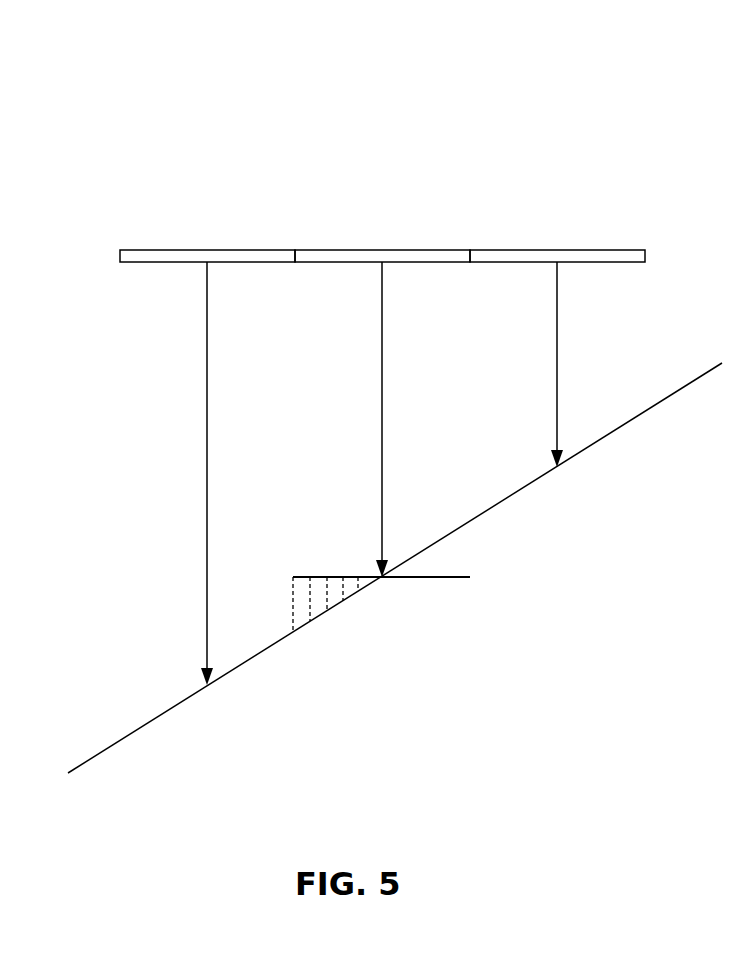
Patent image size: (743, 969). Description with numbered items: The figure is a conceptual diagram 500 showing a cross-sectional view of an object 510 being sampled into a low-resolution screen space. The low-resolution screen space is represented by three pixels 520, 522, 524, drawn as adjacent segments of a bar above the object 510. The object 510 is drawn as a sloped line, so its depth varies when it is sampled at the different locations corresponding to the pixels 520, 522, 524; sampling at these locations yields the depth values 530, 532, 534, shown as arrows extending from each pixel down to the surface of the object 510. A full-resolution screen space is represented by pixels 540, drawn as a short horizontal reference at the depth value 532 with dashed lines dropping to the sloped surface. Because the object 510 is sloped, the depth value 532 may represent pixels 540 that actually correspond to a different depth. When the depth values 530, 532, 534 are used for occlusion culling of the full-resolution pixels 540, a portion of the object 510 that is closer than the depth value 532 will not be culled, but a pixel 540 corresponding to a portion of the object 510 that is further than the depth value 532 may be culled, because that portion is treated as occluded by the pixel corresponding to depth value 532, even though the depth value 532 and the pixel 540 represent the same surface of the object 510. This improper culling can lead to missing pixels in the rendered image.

The conceptual diagram 500 is at (213, 94).
The object 510 is at (147, 725).
The pixel 520 is at (230, 250).
The pixel 522 is at (402, 255).
The pixel 524 is at (580, 247).
The depth value 530 is at (208, 430).
The depth value 532 is at (382, 437).
The depth value 534 is at (558, 426).
The pixels 540 is at (358, 576).